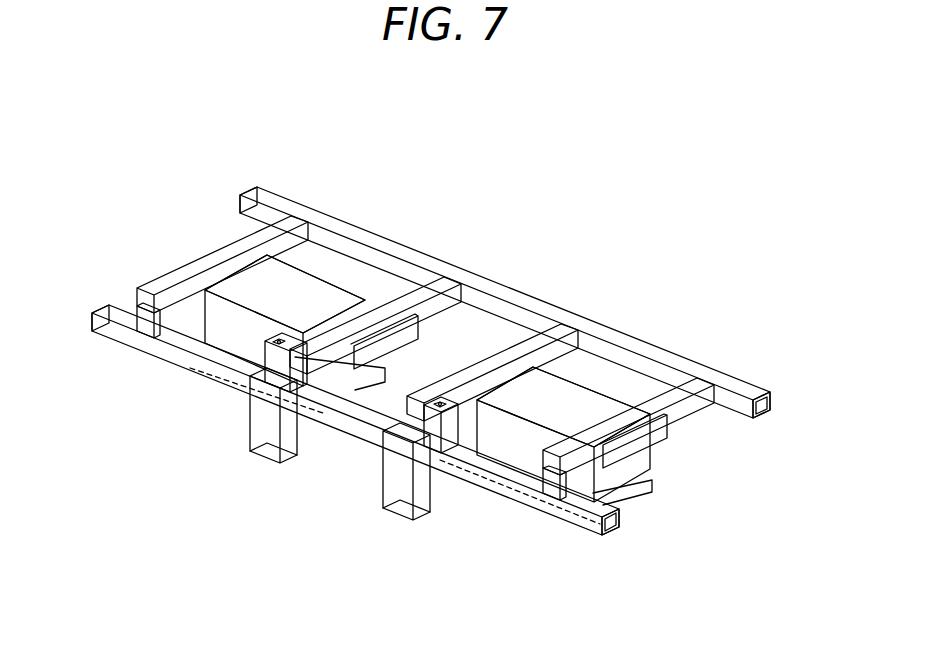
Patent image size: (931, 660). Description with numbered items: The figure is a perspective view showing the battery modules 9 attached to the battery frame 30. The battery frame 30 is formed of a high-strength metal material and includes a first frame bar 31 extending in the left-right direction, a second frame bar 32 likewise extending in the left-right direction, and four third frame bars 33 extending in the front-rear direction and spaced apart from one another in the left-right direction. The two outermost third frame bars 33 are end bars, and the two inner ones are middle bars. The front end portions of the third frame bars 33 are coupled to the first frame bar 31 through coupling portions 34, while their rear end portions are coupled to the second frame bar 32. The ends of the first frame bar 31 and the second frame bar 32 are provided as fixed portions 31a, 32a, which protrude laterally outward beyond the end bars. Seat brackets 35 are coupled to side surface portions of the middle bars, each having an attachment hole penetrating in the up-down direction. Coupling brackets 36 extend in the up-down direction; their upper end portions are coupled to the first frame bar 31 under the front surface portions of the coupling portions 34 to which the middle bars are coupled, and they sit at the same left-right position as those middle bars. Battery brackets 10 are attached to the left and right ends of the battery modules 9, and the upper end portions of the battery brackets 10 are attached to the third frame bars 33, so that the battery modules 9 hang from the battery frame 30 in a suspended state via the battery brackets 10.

The battery module 9 is at (306, 286).
The battery bracket 10 is at (262, 240).
The battery frame 30 is at (466, 153).
The first frame bar 31 is at (166, 352).
The fixed portion 31a is at (108, 308).
The second frame bar 32 is at (604, 336).
The fixed portion 32a is at (258, 186).
The third frame bar 33 is at (298, 214).
The coupling portion 34 is at (145, 318).
The seat bracket 35 is at (276, 346).
The coupling bracket 36 is at (262, 464).